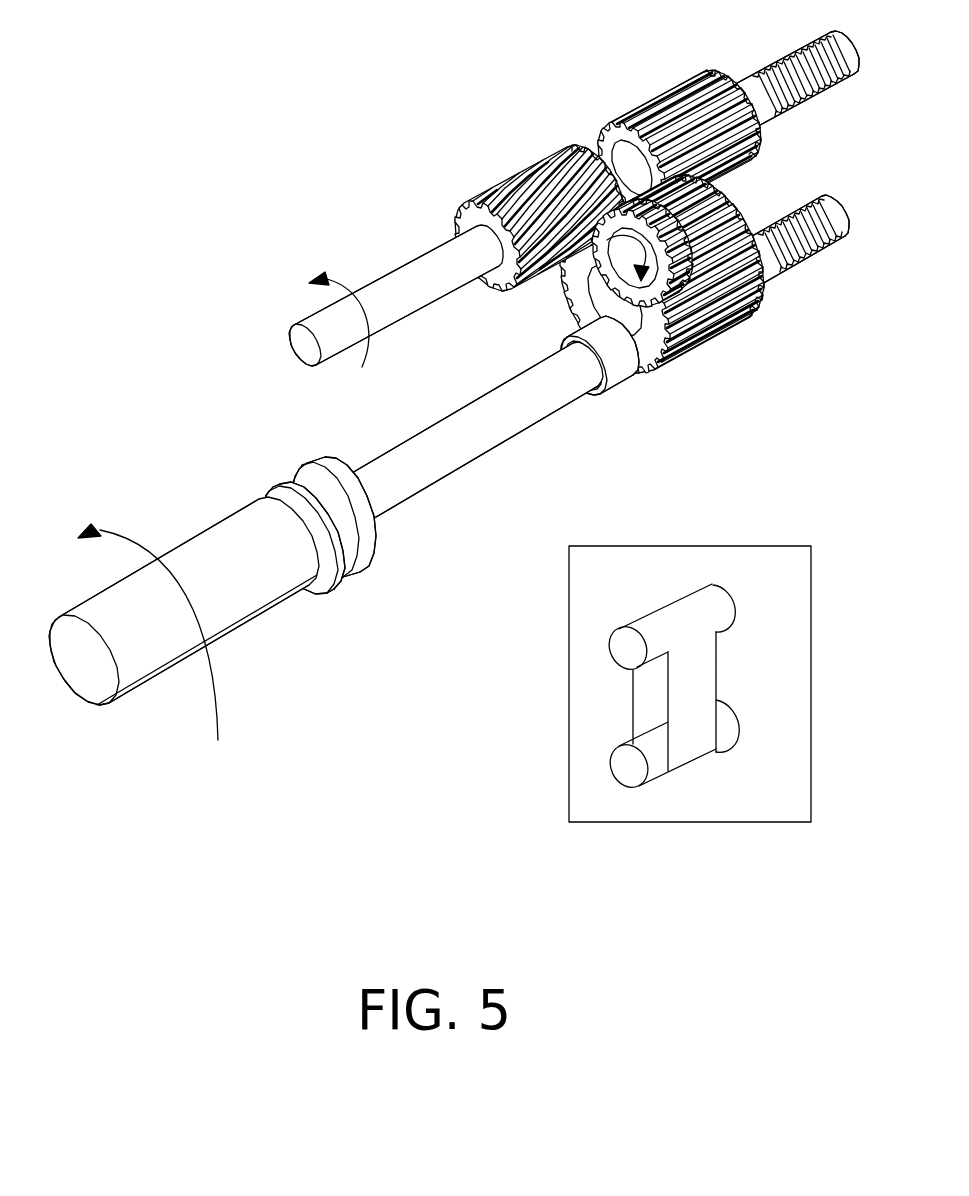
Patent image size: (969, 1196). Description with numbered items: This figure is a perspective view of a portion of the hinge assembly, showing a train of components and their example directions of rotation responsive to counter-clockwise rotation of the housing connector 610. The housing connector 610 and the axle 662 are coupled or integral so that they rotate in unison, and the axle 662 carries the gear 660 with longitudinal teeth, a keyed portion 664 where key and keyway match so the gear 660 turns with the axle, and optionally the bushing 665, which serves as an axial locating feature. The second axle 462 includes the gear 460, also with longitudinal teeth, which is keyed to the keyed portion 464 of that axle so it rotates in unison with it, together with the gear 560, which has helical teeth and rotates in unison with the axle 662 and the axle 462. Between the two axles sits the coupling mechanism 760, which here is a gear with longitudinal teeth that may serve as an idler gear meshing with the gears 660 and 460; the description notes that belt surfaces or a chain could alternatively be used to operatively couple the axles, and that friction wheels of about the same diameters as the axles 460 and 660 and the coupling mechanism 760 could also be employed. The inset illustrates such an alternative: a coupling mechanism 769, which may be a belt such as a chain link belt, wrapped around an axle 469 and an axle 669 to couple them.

The gear 460 is at (647, 117).
The axle 462 is at (435, 260).
The keyed portion of the axle 464 is at (757, 100).
The gear 560 is at (532, 183).
The housing connector 610 is at (240, 622).
The gear 660 is at (700, 330).
The axle 662 is at (487, 450).
The keyed portion of the axle 664 is at (750, 275).
The bushing 665 is at (617, 380).
The coupling mechanism 760 is at (600, 277).
The axle 469 is at (724, 622).
The axle 669 is at (723, 740).
The coupling mechanism 769 is at (663, 613).